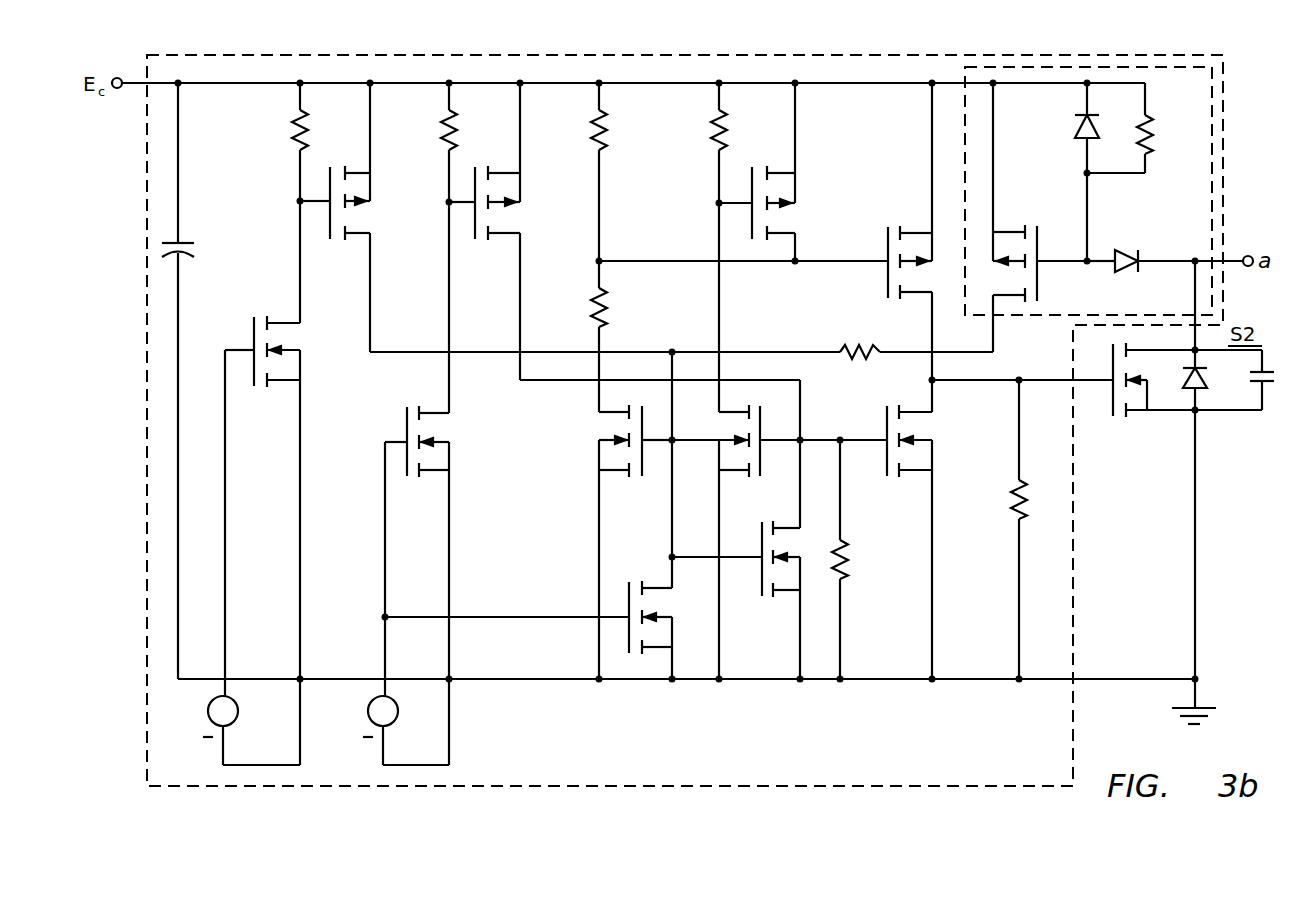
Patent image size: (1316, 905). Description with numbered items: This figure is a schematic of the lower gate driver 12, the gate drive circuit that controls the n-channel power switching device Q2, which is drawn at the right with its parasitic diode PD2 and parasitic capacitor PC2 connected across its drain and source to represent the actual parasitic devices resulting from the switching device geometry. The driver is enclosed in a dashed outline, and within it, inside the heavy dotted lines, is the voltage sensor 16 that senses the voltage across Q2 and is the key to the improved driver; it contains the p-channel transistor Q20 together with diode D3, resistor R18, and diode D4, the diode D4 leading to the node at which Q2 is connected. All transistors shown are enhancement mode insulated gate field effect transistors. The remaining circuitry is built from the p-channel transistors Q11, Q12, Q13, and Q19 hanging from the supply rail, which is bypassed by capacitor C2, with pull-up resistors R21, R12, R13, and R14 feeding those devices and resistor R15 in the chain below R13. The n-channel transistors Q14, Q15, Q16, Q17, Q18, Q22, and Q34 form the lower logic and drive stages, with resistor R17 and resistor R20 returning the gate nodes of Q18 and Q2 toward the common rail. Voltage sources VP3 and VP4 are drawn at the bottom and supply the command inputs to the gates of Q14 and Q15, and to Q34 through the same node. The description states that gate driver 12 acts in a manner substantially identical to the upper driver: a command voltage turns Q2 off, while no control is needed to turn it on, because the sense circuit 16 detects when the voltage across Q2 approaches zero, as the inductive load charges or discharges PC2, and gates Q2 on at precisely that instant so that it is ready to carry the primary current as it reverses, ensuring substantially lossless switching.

The lower gate driver 12 is at (616, 55).
The voltage sensor 16 is at (1212, 205).
The capacitor C2 is at (194, 381).
The resistor R21 is at (321, 203).
The resistor R12 is at (470, 248).
The resistor R13 is at (620, 185).
The resistor R14 is at (740, 247).
The resistor R15 is at (620, 350).
The resistor R17 is at (861, 559).
The resistor R18 is at (1141, 128).
The resistor R20 is at (1000, 529).
The P-channel transistor Q11 is at (357, 217).
The P-channel transistor Q12 is at (506, 231).
The P-channel transistor Q13 is at (778, 172).
The N-channel transistor Q14 is at (286, 540).
The N-channel transistor Q15 is at (439, 585).
The N-channel transistor Q16 is at (617, 542).
The N-channel transistor Q17 is at (785, 542).
The N-channel transistor Q18 is at (932, 542).
The P-channel transistor Q19 is at (889, 247).
The P-channel transistor Q20 is at (1040, 217).
The N-channel transistor Q22 is at (736, 600).
The N-channel transistor Q34 is at (673, 613).
The switching device Q2 is at (1176, 405).
The diode D3 is at (1073, 172).
The diode D4 is at (1165, 249).
The parasitic diode PD2 is at (1216, 484).
The parasitic capacitor PC2 is at (1283, 380).
The voltage source VP3 is at (251, 724).
The voltage source VP4 is at (405, 724).